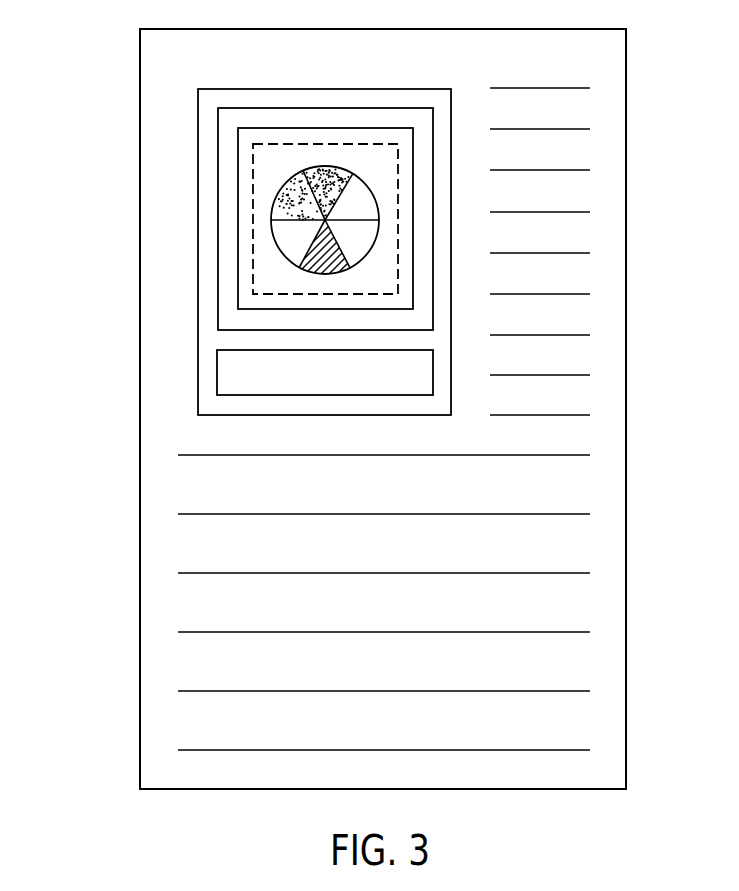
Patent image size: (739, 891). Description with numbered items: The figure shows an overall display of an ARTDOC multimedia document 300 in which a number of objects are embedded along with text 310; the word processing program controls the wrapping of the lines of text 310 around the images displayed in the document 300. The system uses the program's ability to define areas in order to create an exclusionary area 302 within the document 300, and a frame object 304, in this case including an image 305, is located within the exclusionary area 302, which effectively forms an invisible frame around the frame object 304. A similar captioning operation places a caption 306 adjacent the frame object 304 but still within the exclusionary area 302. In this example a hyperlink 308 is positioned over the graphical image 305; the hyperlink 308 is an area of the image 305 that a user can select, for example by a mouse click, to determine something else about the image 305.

The ARTDOC document 300 is at (627, 543).
The exclusionary area 302 is at (197, 199).
The frame object 304 is at (434, 187).
The image 305 is at (325, 127).
The caption 306 is at (217, 372).
The hyperlink 308 is at (252, 234).
The text 310 is at (197, 515).